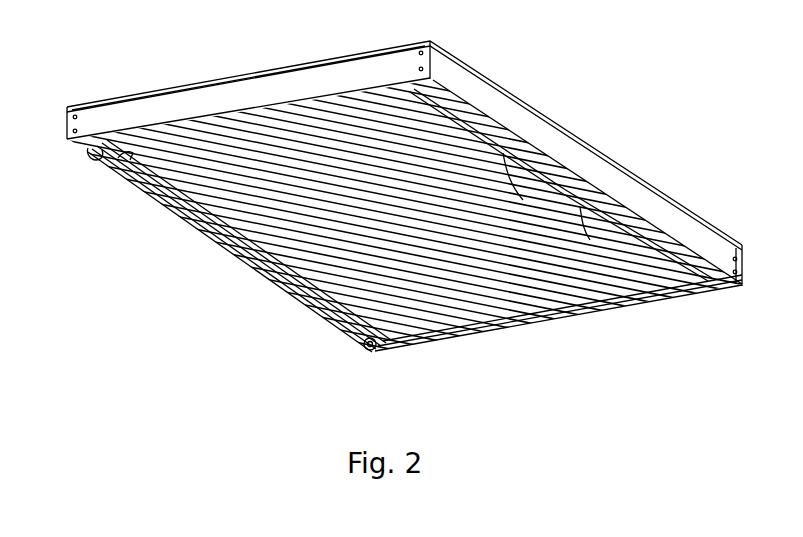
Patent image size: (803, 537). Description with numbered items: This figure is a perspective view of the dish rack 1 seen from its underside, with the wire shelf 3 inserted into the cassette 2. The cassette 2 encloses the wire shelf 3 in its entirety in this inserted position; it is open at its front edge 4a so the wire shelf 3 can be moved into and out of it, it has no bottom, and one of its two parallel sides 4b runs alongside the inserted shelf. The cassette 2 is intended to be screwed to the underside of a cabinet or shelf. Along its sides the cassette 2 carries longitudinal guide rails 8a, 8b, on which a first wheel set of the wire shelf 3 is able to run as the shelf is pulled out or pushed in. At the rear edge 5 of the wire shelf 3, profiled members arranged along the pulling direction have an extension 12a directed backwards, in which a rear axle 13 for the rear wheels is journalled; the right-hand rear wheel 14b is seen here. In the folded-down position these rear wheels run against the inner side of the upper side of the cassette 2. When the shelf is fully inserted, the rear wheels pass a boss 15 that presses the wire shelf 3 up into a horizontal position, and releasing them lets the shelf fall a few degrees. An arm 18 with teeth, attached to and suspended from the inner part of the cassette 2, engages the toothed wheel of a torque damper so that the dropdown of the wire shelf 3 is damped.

The dish rack 1 is at (586, 73).
The cassette 2 is at (178, 91).
The wire shelf 3 is at (510, 294).
The front edge 4a is at (655, 186).
The parallel side 4b is at (255, 104).
The rear edge 5 is at (283, 251).
The longitudinal guide rail 8a is at (355, 100).
The longitudinal guide rail 8b is at (714, 290).
The extension 12a is at (100, 161).
The rear axle 13 is at (199, 230).
The rear wheel 14b is at (367, 348).
The boss 15 is at (345, 311).
The arm 18 is at (127, 160).